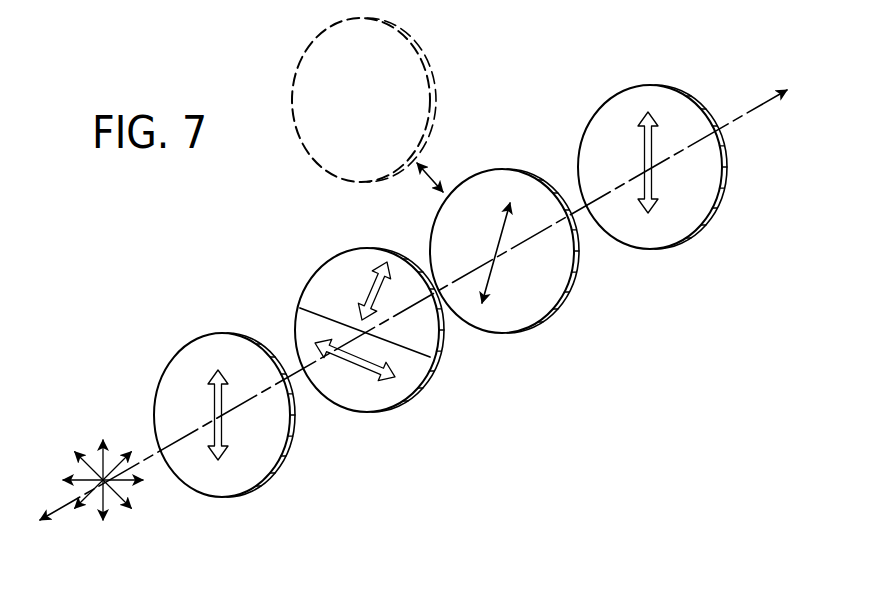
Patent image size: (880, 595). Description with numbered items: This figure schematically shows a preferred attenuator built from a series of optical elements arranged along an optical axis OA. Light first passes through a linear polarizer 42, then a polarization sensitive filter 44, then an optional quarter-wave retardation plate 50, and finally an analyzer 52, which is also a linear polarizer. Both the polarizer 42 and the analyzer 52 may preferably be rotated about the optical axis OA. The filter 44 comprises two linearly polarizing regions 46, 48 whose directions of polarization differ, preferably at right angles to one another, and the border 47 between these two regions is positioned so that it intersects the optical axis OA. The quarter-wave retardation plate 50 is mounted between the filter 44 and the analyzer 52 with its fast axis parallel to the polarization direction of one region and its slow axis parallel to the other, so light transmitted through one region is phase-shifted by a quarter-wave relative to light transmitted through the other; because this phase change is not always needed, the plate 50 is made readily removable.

The linear polarizer 42 is at (274, 468).
The polarization sensitive filter 44 is at (346, 328).
The linearly polarizing region 46 is at (350, 262).
The border 47 is at (315, 308).
The linearly polarizing region 48 is at (302, 333).
The quarter-wave retardation plate 50 is at (497, 170).
The analyzer 52 is at (628, 107).
The optical axis OA is at (743, 118).